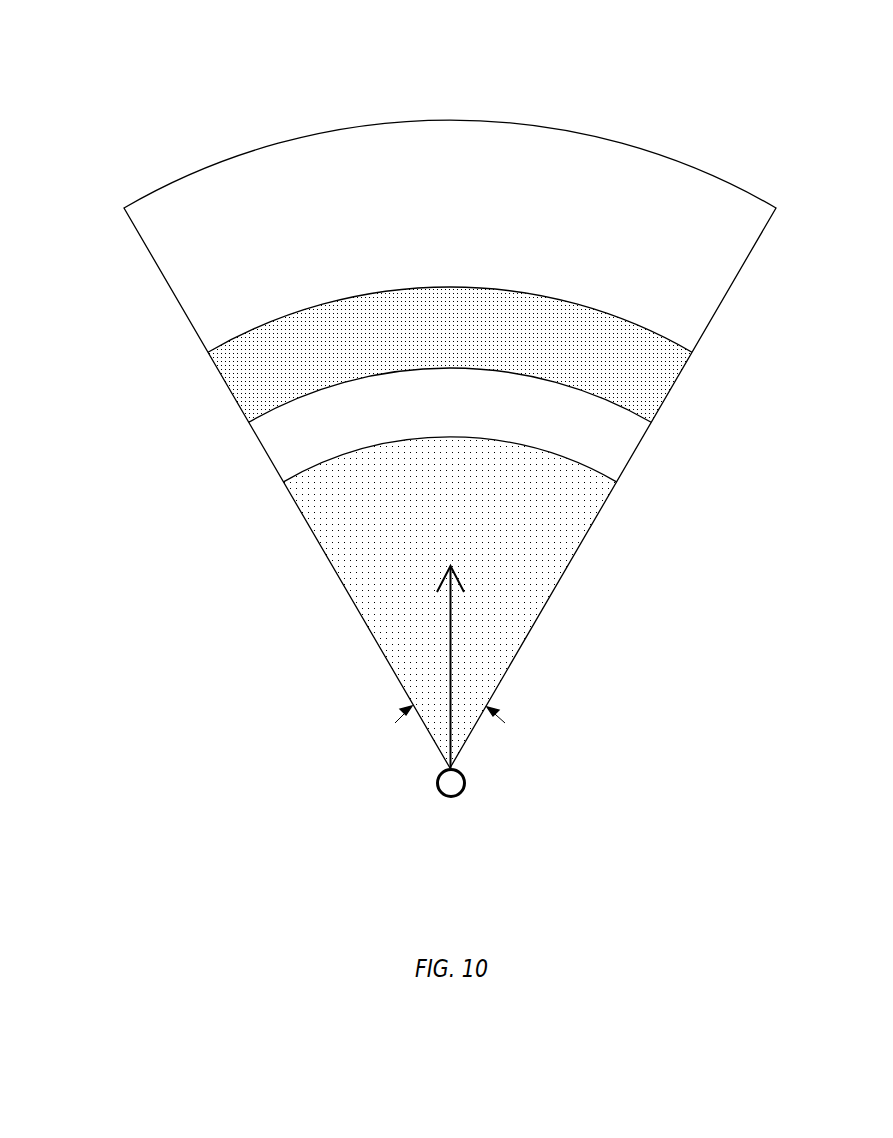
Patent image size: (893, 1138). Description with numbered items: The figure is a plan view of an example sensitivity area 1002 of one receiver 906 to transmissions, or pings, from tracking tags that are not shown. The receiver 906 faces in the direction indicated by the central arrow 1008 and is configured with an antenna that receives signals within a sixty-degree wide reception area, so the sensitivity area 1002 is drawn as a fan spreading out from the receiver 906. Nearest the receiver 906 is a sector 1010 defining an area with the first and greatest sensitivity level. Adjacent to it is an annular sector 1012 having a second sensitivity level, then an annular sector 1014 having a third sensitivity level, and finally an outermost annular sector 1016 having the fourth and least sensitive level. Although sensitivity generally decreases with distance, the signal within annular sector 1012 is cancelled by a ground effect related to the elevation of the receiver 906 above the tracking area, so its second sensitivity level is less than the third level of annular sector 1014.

The sensitivity area 1002 is at (450, 97).
The annular sector 1016 is at (198, 260).
The annular sector 1014 is at (243, 369).
The annular sector 1012 is at (283, 438).
The sector 1010 is at (377, 540).
The central axis direction arrow 1008 is at (448, 605).
The receiver 906 is at (435, 787).